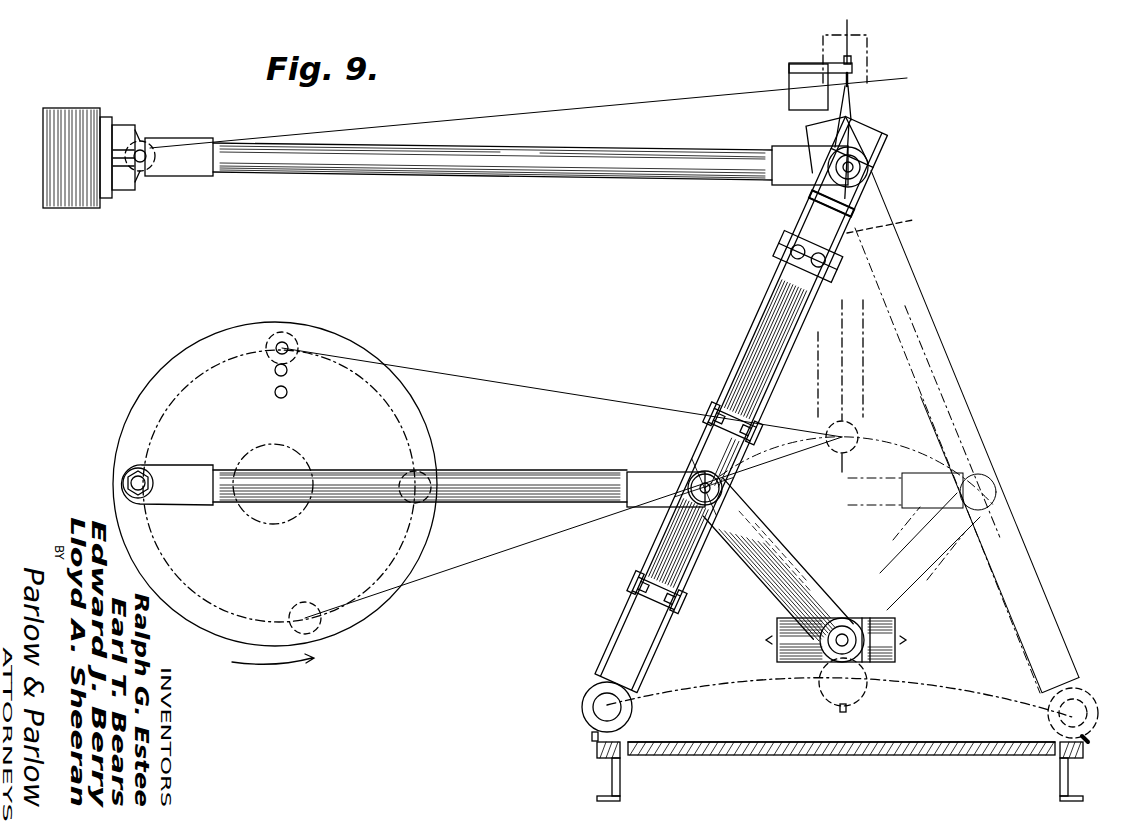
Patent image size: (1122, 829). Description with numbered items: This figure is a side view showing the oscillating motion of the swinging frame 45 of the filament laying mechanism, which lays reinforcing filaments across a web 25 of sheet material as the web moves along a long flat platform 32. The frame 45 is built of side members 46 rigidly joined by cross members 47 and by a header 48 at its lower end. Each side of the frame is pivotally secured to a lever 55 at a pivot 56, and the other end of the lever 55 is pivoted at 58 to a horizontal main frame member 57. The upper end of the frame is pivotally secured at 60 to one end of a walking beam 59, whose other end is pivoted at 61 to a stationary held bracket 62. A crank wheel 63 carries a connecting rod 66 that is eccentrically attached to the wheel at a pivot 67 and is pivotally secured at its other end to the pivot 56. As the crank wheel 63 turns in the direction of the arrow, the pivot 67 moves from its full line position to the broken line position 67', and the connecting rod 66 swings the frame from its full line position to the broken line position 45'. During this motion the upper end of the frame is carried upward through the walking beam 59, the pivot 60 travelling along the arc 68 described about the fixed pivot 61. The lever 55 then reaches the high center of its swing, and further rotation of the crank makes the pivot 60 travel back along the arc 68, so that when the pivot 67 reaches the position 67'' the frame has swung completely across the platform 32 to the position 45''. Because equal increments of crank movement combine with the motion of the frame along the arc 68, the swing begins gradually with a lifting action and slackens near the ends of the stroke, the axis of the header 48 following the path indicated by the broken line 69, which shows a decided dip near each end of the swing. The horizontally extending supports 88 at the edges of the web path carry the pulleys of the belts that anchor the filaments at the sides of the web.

The web 25 is at (895, 738).
The platform 32 is at (810, 753).
The swinging frame 45 is at (731, 399).
The broken line position of swinging frame 45' is at (851, 246).
The broken line position of swinging frame 45'' is at (956, 432).
The side members 46 is at (738, 380).
The cross members 47 is at (713, 425).
The header 48 is at (582, 707).
The lever 55 is at (781, 548).
The pivot 56 is at (722, 488).
The horizontal main frame member 57 is at (777, 650).
The pivot 58 is at (830, 652).
The walking beam 59 is at (700, 181).
The pivot 60 is at (868, 165).
The pivot 61 is at (143, 152).
The bracket 62 is at (120, 130).
The crank wheel 63 is at (212, 635).
The connecting rod 66 is at (496, 498).
The pivot 67 is at (163, 462).
The broken line position of pivot 67' is at (332, 636).
The broken line position of pivot 67'' is at (450, 463).
The arc 68 is at (943, 449).
The broken line 69 is at (708, 684).
The horizontally extending support 88 is at (621, 785).